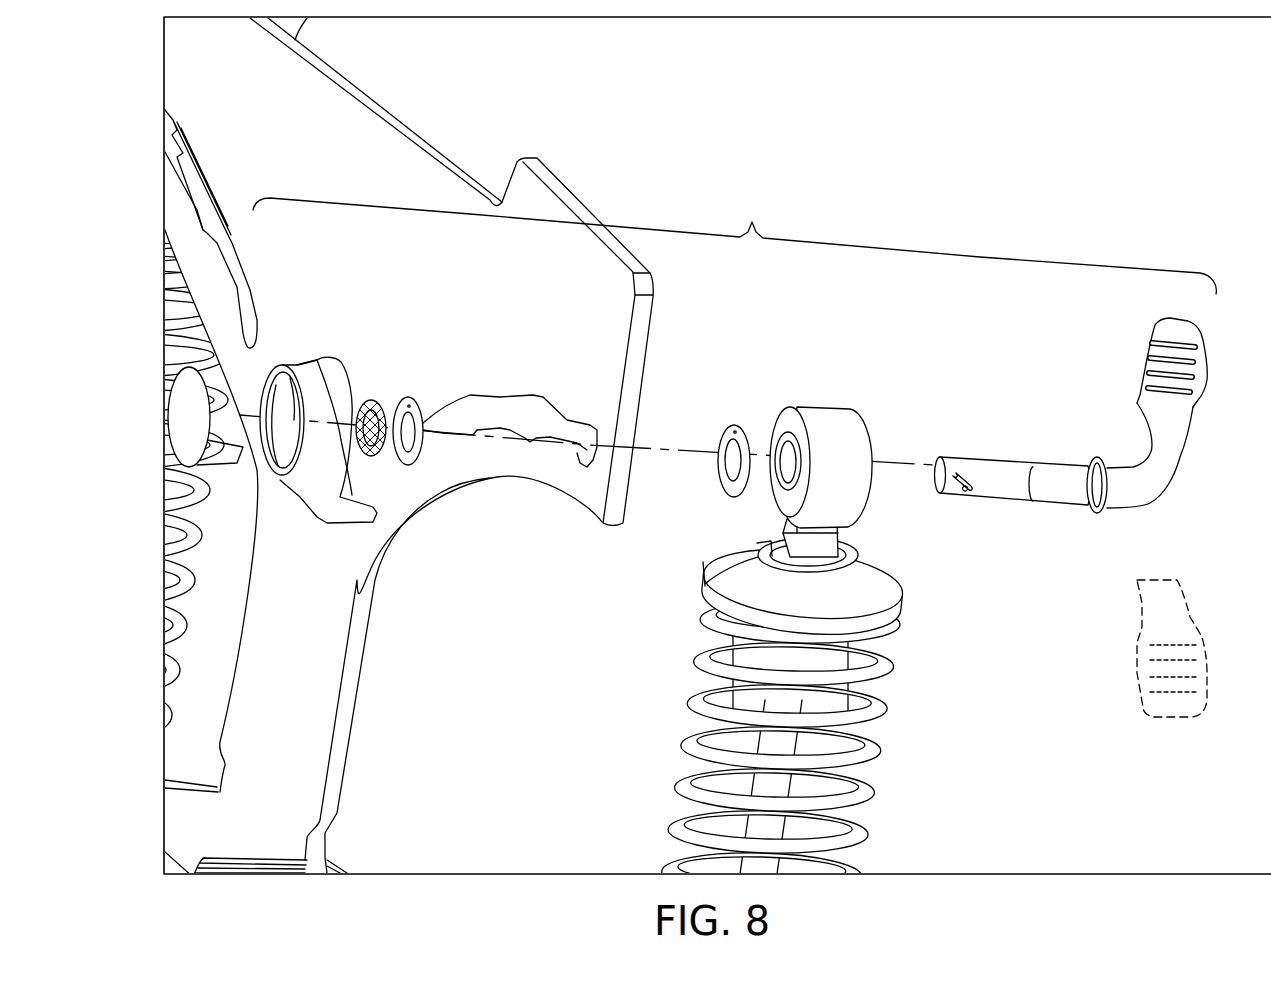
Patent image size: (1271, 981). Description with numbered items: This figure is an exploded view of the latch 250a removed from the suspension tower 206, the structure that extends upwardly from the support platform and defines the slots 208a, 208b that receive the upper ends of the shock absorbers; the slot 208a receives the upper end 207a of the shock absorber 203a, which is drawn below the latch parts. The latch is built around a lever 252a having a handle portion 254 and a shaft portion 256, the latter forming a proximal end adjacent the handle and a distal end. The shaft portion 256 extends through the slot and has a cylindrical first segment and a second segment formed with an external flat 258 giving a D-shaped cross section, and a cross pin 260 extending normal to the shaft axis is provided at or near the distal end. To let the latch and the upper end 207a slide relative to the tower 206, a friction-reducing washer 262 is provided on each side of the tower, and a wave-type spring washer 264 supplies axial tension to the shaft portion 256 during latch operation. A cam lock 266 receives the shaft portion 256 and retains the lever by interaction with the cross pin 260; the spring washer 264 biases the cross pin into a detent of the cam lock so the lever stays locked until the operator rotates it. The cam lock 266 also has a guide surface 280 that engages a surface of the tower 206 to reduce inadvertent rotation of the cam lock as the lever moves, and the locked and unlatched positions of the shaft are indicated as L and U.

The shock absorber 203a is at (890, 742).
The suspension tower 206 is at (550, 175).
The upper end 207a is at (872, 488).
The slot 208a is at (443, 445).
The slot 208b is at (210, 193).
The latch 250a is at (754, 220).
The lever 252a is at (1208, 383).
The handle portion 254 is at (1183, 443).
The shaft portion 256 is at (1075, 508).
The external flat 258 is at (997, 480).
The cross pin 260 is at (935, 460).
The washer 262 is at (402, 467).
The spring washer 264 is at (373, 463).
The cam lock 266 is at (313, 507).
The guide surface 280 is at (324, 356).